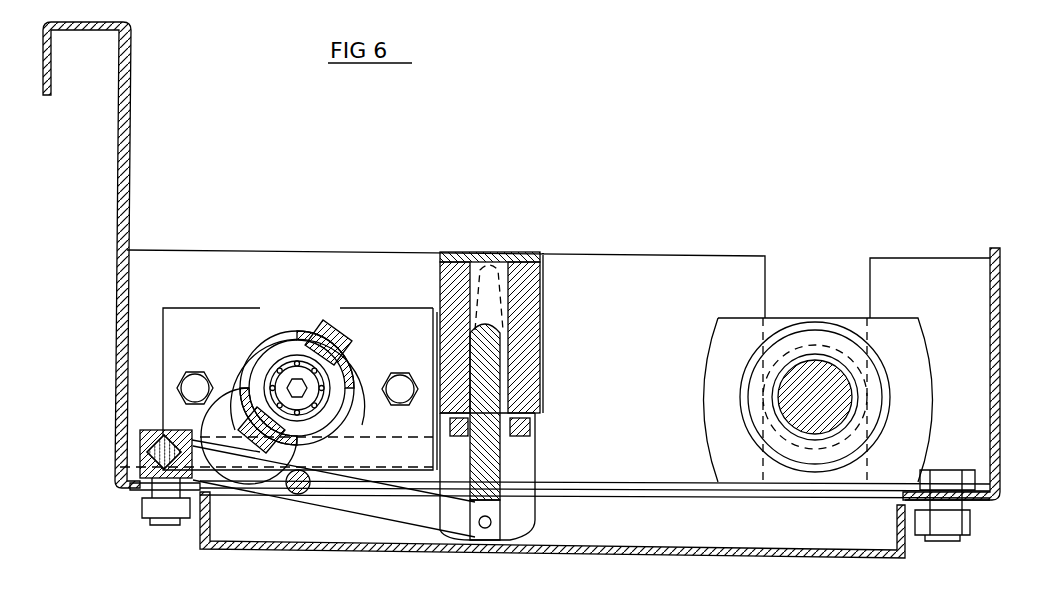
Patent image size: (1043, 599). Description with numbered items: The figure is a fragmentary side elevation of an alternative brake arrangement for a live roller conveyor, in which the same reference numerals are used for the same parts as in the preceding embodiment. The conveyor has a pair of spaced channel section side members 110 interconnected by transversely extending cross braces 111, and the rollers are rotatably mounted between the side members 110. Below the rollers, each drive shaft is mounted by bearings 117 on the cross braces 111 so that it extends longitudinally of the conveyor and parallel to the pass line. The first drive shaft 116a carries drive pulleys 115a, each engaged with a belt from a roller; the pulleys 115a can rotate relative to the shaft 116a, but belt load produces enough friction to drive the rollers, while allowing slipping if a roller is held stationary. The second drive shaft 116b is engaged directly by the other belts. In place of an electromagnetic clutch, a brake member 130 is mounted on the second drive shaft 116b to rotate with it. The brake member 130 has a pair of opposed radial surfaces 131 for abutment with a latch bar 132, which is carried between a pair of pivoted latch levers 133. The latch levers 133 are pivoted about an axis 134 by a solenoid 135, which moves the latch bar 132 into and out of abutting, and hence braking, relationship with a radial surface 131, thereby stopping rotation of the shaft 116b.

The channel section side member 110 is at (120, 145).
The cross brace 111 is at (648, 462).
The drive pulley 115a is at (852, 465).
The first drive shaft 116a is at (818, 395).
The second drive shaft 116b is at (243, 462).
The bearing 117 is at (738, 468).
The brake member 130 is at (292, 336).
The radial surface 131 is at (302, 332).
The latch bar 132 is at (303, 494).
The latch lever 133 is at (402, 510).
The pivot axis 134 is at (163, 500).
The solenoid 135 is at (548, 292).